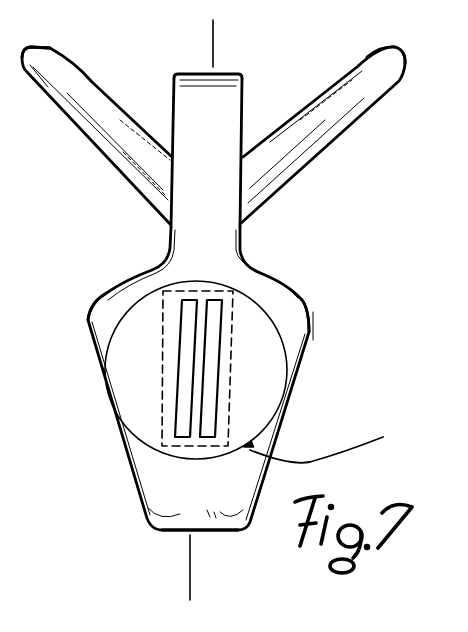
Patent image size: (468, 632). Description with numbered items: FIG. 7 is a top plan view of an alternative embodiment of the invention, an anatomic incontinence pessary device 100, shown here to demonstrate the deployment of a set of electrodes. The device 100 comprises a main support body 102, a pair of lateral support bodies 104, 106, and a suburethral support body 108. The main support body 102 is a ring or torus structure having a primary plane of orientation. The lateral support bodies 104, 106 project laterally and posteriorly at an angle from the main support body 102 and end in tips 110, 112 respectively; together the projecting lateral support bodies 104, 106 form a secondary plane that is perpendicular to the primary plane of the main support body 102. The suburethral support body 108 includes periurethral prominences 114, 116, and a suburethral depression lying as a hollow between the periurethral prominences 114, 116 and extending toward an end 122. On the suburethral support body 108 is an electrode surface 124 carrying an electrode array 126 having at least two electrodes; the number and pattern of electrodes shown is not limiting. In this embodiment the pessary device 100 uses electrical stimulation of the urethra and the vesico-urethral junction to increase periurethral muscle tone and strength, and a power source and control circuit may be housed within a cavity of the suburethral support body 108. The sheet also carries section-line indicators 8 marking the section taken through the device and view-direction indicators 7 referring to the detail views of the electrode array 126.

The anatomic incontinence pessary device 100 is at (240, 309).
The main support body 102 is at (246, 117).
The lateral support body 104 is at (97, 116).
The lateral support body 106 is at (349, 135).
The suburethral support body 108 is at (239, 418).
The tip 110 is at (26, 46).
The tip 112 is at (404, 50).
The periurethral prominence 114 is at (110, 304).
The periurethral prominence 116 is at (278, 312).
The end 122 is at (222, 537).
The electrode surface 124 is at (230, 398).
The electrode array 126 is at (208, 450).
The section line 8- 8 is at (206, 36).
The view direction 7A,7B,7C 7 is at (341, 431).